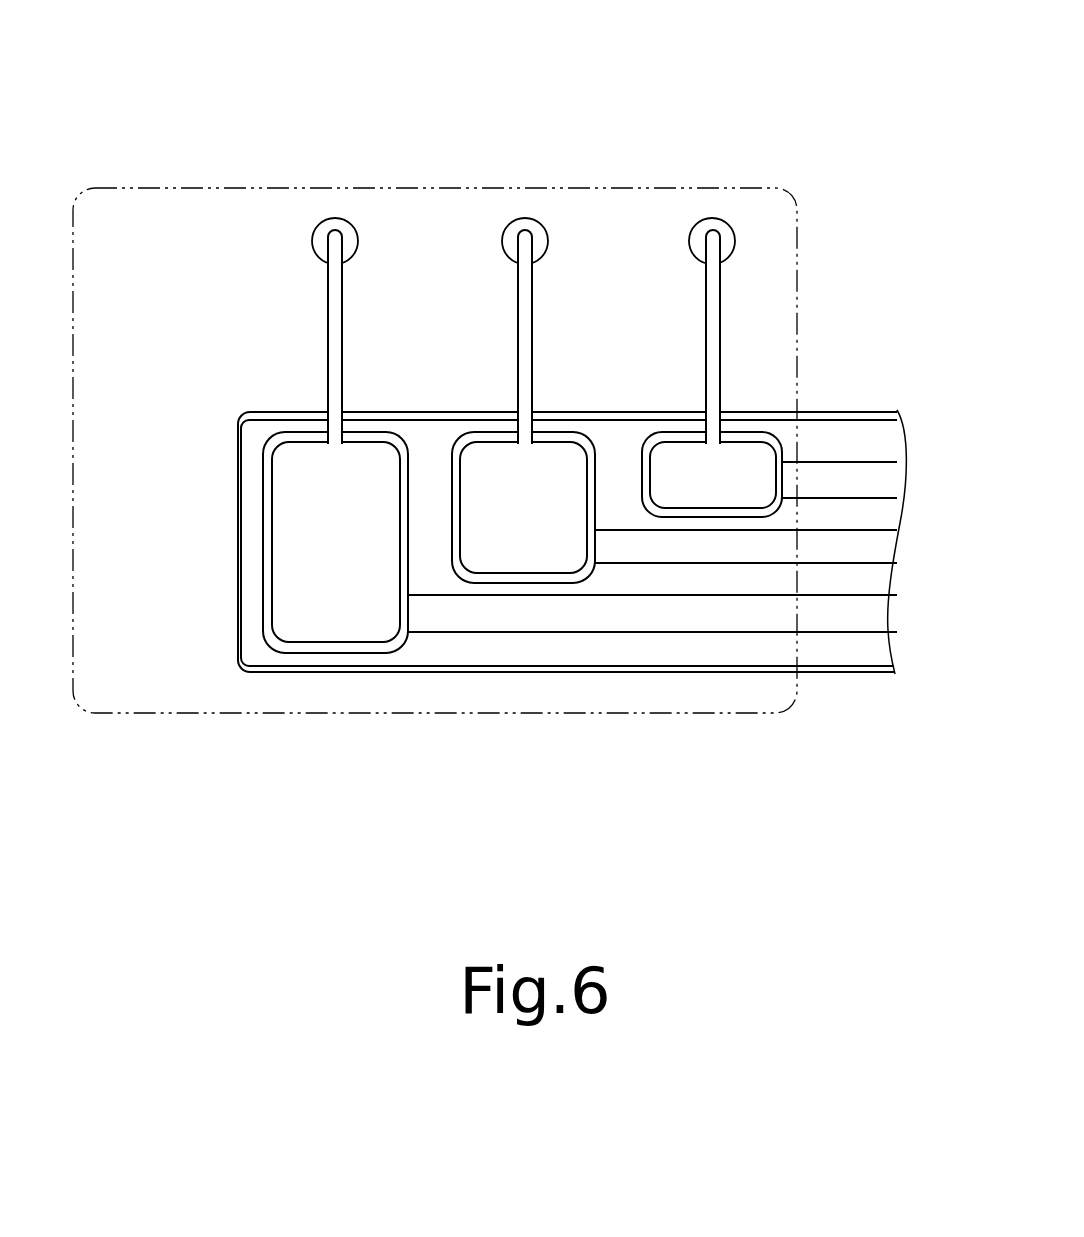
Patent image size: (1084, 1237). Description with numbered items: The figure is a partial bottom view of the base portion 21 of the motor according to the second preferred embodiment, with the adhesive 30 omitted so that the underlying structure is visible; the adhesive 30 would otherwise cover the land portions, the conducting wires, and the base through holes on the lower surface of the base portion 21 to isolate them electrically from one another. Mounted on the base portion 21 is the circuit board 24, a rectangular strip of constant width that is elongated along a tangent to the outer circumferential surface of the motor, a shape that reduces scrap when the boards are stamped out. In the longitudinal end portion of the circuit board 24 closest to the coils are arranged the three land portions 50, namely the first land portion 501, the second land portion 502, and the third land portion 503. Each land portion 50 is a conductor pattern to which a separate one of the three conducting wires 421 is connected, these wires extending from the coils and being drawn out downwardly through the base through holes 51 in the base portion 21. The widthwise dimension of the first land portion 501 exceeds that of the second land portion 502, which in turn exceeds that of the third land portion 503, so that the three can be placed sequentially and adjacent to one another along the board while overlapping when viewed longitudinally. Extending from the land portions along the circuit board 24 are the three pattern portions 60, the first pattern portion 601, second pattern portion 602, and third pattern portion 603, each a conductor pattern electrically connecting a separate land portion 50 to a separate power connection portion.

The base portion 21 is at (572, 441).
The circuit board 24 is at (822, 443).
The adhesive 30 is at (222, 277).
The land portions 50 is at (522, 650).
The first land portion 501 is at (323, 558).
The second land portion 502 is at (520, 545).
The third land portion 503 is at (688, 483).
The base through holes 51 is at (327, 218).
The conducting wires 421 is at (523, 333).
The pattern portions 60 is at (655, 665).
The first pattern portion 601 is at (902, 808).
The second pattern portion 602 is at (760, 550).
The third pattern portion 603 is at (835, 483).